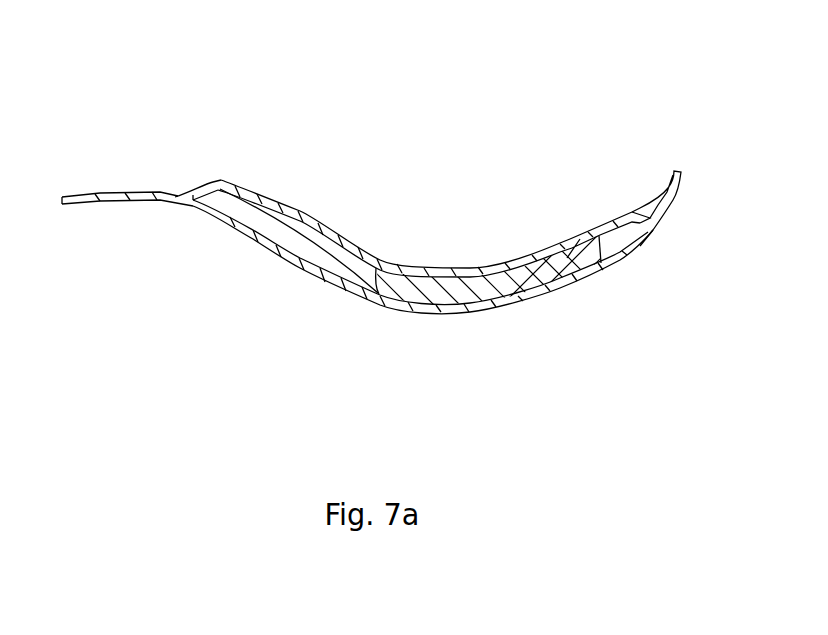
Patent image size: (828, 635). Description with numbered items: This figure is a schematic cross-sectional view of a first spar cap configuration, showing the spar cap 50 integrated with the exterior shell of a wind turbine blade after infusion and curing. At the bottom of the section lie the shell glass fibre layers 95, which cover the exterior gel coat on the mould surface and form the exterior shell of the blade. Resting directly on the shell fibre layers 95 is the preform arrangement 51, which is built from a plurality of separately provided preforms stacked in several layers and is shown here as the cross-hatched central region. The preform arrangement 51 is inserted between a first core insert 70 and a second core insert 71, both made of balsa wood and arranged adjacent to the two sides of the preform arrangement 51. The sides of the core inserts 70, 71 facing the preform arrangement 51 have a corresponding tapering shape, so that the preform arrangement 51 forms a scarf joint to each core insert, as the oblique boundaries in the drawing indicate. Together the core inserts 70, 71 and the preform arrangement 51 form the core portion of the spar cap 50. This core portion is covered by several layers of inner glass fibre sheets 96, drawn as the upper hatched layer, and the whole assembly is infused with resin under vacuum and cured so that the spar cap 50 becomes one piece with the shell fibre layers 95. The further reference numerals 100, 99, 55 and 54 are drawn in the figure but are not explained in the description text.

The spar cap 50 is at (308, 88).
The tab 100 is at (203, 178).
The inner glass fibre sheets 96 is at (300, 212).
The first core insert 70 is at (618, 224).
The tip 99 is at (640, 210).
The second core insert 71 is at (263, 226).
The shell glass fibre layers 95 is at (343, 292).
The preform arrangement 51 is at (506, 276).
The core front boundary 55 is at (385, 292).
The core rear portion 54 is at (600, 283).